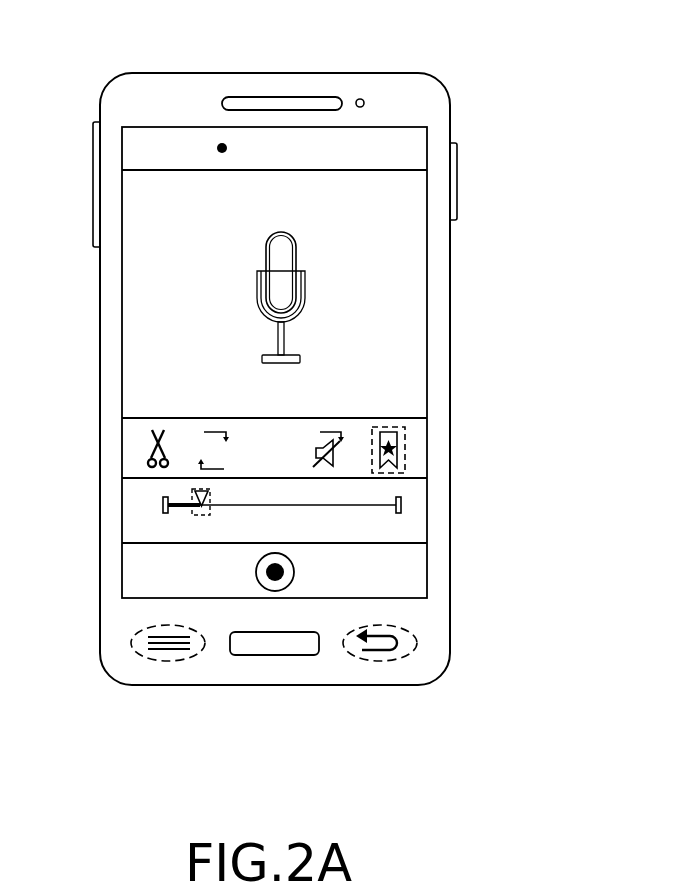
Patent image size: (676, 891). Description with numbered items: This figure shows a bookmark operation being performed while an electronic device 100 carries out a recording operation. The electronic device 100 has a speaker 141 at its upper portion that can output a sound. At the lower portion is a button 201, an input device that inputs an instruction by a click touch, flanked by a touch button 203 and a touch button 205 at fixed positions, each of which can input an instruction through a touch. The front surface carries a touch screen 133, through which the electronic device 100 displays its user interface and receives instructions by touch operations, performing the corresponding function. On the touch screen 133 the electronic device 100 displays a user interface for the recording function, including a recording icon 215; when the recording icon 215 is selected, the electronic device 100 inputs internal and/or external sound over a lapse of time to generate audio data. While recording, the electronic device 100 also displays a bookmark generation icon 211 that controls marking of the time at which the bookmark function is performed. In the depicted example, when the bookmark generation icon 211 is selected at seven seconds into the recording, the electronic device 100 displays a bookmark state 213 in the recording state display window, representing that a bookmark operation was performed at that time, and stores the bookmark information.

The electronic device 100 is at (388, 27).
The speaker 141 is at (247, 100).
The touch screen 133 is at (427, 252).
The bookmark generation icon 211 is at (406, 450).
The bookmark state 213 is at (196, 492).
The recording icon 215 is at (294, 572).
The touch button 203 is at (168, 662).
The button 201 is at (272, 656).
The touch button 205 is at (378, 662).